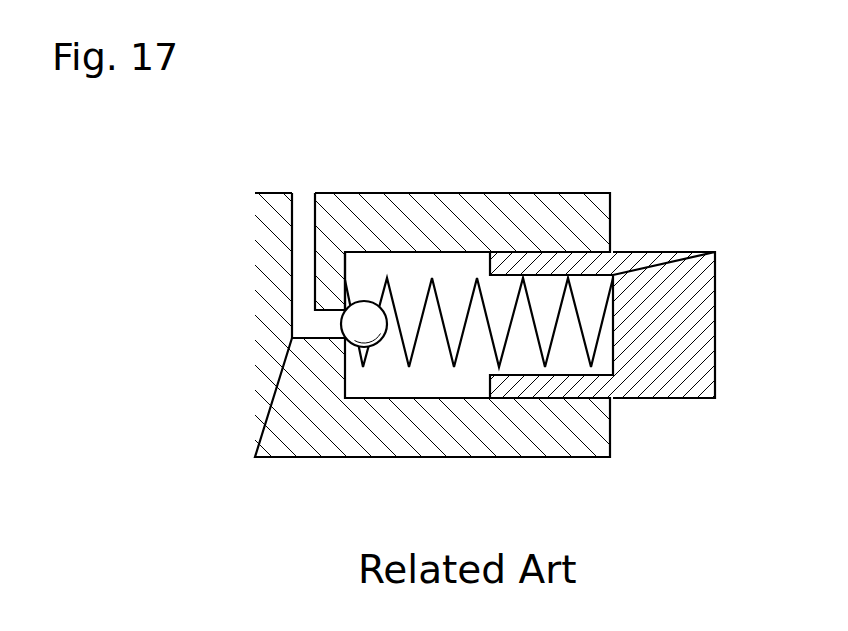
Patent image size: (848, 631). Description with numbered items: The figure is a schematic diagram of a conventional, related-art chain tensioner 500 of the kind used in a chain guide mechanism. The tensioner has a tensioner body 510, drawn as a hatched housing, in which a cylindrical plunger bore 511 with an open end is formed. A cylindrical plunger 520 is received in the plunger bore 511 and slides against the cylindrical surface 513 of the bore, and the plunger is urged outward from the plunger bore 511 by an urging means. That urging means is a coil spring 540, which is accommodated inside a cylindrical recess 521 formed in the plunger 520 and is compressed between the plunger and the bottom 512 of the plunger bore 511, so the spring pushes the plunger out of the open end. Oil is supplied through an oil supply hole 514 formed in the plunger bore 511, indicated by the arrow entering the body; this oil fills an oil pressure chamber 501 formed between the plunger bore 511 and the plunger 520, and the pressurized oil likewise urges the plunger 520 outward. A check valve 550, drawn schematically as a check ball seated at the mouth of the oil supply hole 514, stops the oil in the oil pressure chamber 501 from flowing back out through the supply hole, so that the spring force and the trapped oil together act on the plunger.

The chain tensioner 500 is at (700, 125).
The tensioner body 510 is at (373, 432).
The plunger bore 511 is at (481, 133).
The bottom 512 is at (470, 258).
The cylindrical surface 513 is at (347, 273).
The oil supply hole 514 is at (303, 193).
The plunger 520 is at (700, 349).
The cylindrical recess 521 is at (553, 286).
The coil spring 540 is at (553, 338).
The check valve 550 is at (342, 323).
The oil pressure chamber 501 is at (430, 353).